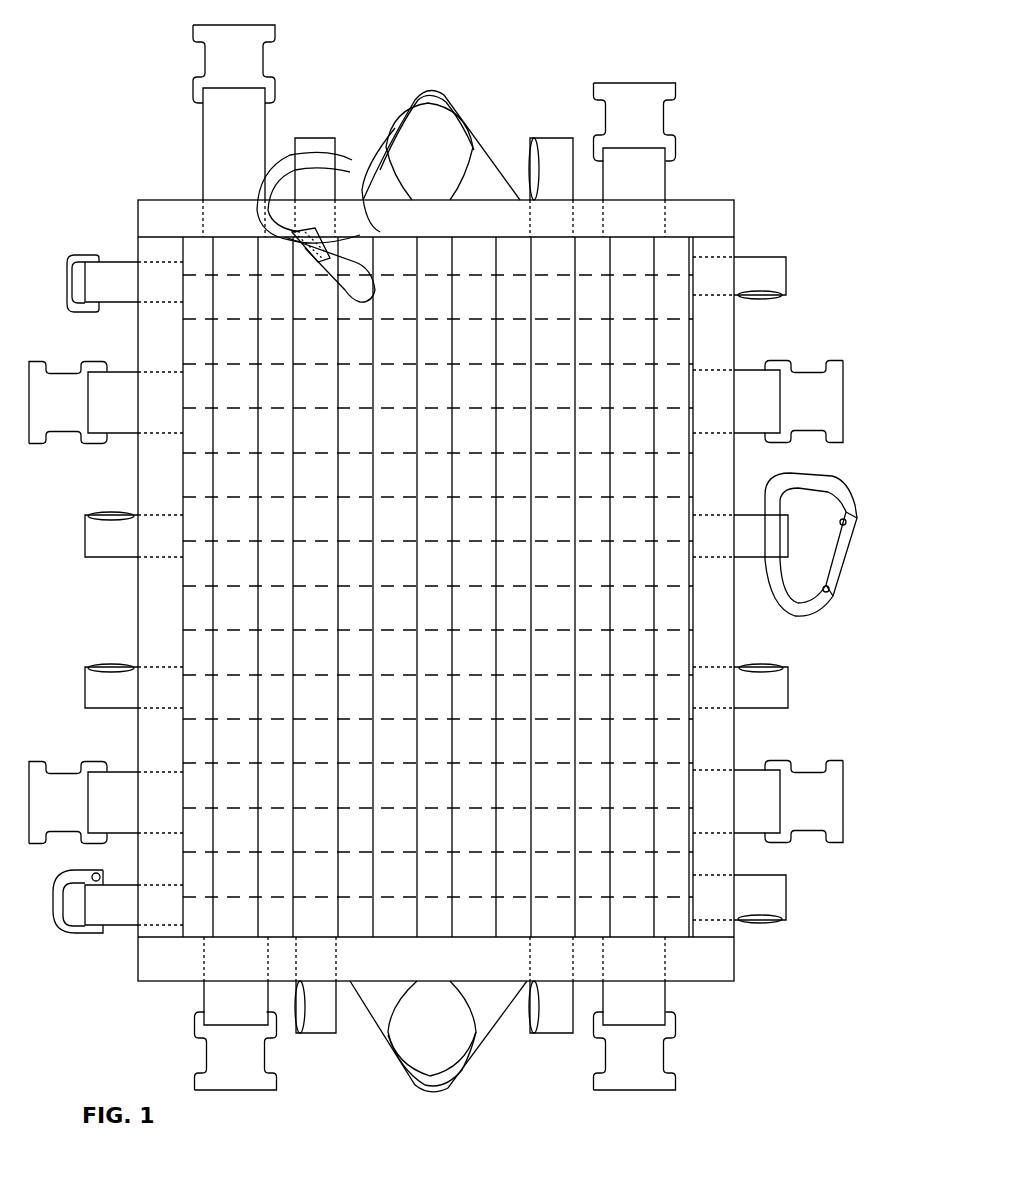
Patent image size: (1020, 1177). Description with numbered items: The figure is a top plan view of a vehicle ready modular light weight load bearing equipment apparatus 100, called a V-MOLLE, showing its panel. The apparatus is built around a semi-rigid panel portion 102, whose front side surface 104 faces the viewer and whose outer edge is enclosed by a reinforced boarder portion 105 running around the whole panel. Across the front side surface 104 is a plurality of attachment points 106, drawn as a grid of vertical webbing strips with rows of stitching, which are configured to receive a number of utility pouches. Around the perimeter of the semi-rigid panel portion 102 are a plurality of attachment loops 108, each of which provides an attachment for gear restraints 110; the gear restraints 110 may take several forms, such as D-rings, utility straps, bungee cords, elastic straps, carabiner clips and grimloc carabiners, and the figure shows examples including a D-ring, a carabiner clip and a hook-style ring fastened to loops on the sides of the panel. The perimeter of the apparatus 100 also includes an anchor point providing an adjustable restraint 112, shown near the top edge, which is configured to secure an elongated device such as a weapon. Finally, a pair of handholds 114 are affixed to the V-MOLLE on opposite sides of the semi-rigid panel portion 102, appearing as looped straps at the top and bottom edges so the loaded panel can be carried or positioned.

The vehicle ready modular light weight load bearing equipment apparatus 100 is at (750, 72).
The semi-rigid panel portion 102 is at (82, 597).
The front side surface 104 is at (192, 248).
The reinforced boarder portion 105 is at (136, 470).
The attachment points 106 is at (212, 642).
The attachment loops 108 is at (786, 257).
The gear restraints 110 is at (78, 255).
The adjustable restraint 112 is at (350, 142).
The handholds 114 is at (468, 118).